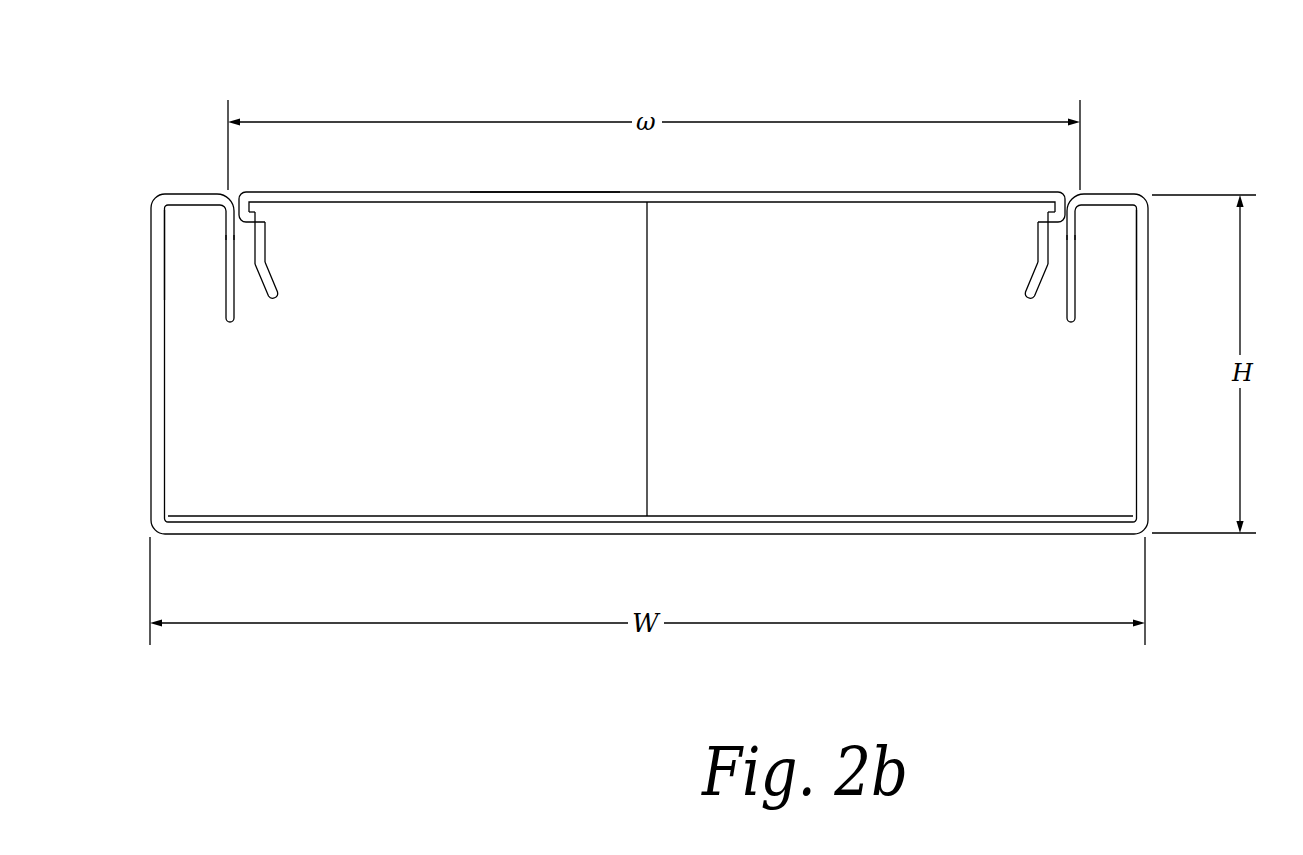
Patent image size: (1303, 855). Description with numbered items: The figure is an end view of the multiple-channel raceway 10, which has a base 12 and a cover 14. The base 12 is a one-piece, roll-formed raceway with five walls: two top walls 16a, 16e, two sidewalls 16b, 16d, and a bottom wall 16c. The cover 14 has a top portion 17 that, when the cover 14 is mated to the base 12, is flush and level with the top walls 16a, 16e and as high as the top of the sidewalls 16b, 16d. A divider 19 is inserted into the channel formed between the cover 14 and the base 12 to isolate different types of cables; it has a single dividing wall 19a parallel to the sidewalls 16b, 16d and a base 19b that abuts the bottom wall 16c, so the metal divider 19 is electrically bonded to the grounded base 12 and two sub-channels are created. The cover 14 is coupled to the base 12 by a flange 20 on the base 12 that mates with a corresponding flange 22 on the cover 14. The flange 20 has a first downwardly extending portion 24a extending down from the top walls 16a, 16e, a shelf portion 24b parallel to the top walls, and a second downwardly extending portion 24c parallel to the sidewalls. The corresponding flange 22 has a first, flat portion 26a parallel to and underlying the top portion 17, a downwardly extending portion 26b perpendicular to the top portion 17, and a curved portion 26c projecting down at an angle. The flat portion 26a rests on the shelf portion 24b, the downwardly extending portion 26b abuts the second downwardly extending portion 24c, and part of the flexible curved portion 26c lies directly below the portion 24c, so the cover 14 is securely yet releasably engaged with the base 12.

The multiple-channel raceway 10 is at (1156, 68).
The base 12 is at (647, 359).
The cover 14 is at (652, 216).
The top wall 16a is at (1120, 193).
The sidewall 16b is at (1148, 322).
The bottom wall 16c is at (733, 535).
The sidewall 16d is at (151, 318).
The top wall 16e is at (185, 193).
The top portion 17 is at (540, 191).
The divider 19 is at (650, 359).
The dividing wall 19a is at (648, 356).
The base of divider 19b is at (836, 515).
The flange 20 is at (216, 252).
The corresponding flange 22 is at (652, 216).
The first downwardly extending portion 24a is at (210, 214).
The shelf portion 24b is at (229, 322).
The second downwardly extending portion 24c is at (266, 246).
The first, flat portion 26a is at (244, 191).
The downwardly extending portion 26b is at (263, 219).
The curved portion 26c is at (276, 285).